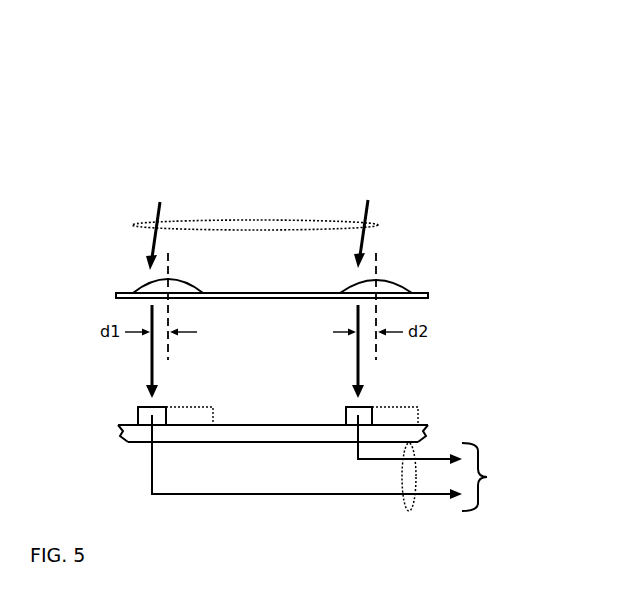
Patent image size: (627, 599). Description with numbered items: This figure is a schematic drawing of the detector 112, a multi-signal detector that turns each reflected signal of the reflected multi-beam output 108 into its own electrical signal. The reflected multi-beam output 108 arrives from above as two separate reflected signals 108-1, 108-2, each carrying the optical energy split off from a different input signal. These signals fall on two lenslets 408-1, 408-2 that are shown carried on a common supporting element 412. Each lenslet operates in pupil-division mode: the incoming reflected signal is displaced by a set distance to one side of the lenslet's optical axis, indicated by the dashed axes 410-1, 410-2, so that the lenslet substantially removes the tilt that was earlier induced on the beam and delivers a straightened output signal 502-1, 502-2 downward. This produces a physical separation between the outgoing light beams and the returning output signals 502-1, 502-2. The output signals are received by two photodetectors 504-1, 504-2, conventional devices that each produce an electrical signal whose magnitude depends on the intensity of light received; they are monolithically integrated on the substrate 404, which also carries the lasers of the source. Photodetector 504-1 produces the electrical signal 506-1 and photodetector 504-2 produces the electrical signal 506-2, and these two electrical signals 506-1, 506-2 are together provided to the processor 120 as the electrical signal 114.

The detector 112 is at (70, 106).
The reflected multi-beam output 108 is at (372, 226).
The reflected signal 108-1 is at (157, 214).
The reflected signal 108-2 is at (364, 214).
The lens substrate 412 is at (430, 297).
The lenslet 408-1 is at (135, 289).
The lenslet 408-2 is at (342, 289).
The first lens optical axis 410-1 is at (172, 350).
The second lens optical axis 410-2 is at (378, 350).
The output signal 502-1 is at (148, 352).
The output signal 502-2 is at (356, 352).
The photodetector 504-1 is at (138, 415).
The photodetector 504-2 is at (346, 415).
The substrate 404 is at (122, 433).
The electrical signal 506-1 is at (150, 478).
The electrical signal 506-2 is at (356, 450).
The electrical signal 114 is at (408, 508).
The processor 120 is at (524, 475).